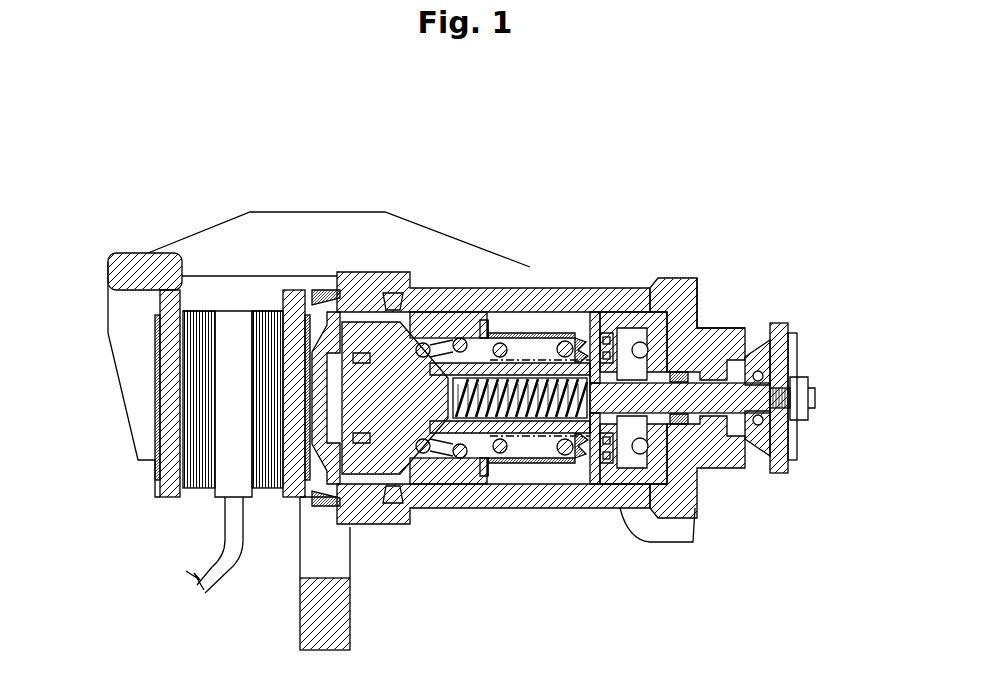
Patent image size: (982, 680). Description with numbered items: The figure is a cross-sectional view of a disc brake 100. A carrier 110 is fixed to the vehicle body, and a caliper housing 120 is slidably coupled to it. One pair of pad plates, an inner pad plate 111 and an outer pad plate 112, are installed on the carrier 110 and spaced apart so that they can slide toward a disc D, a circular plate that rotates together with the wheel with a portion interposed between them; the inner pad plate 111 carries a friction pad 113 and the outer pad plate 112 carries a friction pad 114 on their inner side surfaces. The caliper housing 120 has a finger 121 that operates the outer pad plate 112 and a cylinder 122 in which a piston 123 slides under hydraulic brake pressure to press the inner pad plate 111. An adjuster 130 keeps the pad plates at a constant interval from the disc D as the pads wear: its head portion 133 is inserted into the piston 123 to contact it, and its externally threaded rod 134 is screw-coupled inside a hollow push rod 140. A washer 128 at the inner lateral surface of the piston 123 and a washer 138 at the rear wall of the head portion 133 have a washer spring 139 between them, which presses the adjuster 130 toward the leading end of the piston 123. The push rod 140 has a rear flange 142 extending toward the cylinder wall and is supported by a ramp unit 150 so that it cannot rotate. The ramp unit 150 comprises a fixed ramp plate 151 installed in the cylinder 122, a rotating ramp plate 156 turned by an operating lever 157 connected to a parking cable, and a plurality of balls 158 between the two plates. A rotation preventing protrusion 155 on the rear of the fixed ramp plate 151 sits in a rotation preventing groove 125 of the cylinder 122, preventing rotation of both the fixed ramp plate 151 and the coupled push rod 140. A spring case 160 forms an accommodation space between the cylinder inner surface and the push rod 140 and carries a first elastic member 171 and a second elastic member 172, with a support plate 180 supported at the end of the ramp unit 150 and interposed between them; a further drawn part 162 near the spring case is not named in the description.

The disc brake 100 is at (471, 139).
The carrier 110 is at (308, 596).
The inner pad plate 111 is at (292, 497).
The outer pad plate 112 is at (168, 497).
The friction pad 113 is at (266, 480).
The friction pad 114 is at (200, 476).
The disc D is at (192, 582).
The caliper housing 120 is at (295, 329).
The finger 121 is at (128, 388).
The cylinder 122 is at (505, 286).
The piston 123 is at (377, 474).
The rotation preventing groove 125 is at (728, 465).
The washer 128 is at (480, 325).
The adjuster 130 is at (466, 575).
The head portion 133 is at (418, 455).
The rod 134 is at (461, 460).
The washer 138 is at (425, 330).
The washer spring 139 is at (447, 335).
The push rod 140 is at (560, 412).
The flange 142 is at (618, 320).
The ramp unit 150 is at (703, 391).
The fixed ramp plate 151 is at (697, 317).
The rotation preventing protrusion 155 is at (675, 458).
The rotating ramp plate 156 is at (815, 397).
The operating lever 157 is at (795, 332).
The balls 158 is at (657, 327).
The spring case 160 is at (536, 338).
The seal 162 is at (579, 335).
The first elastic member 171 is at (588, 478).
The second elastic member 172 is at (598, 335).
The support plate 180 is at (577, 468).